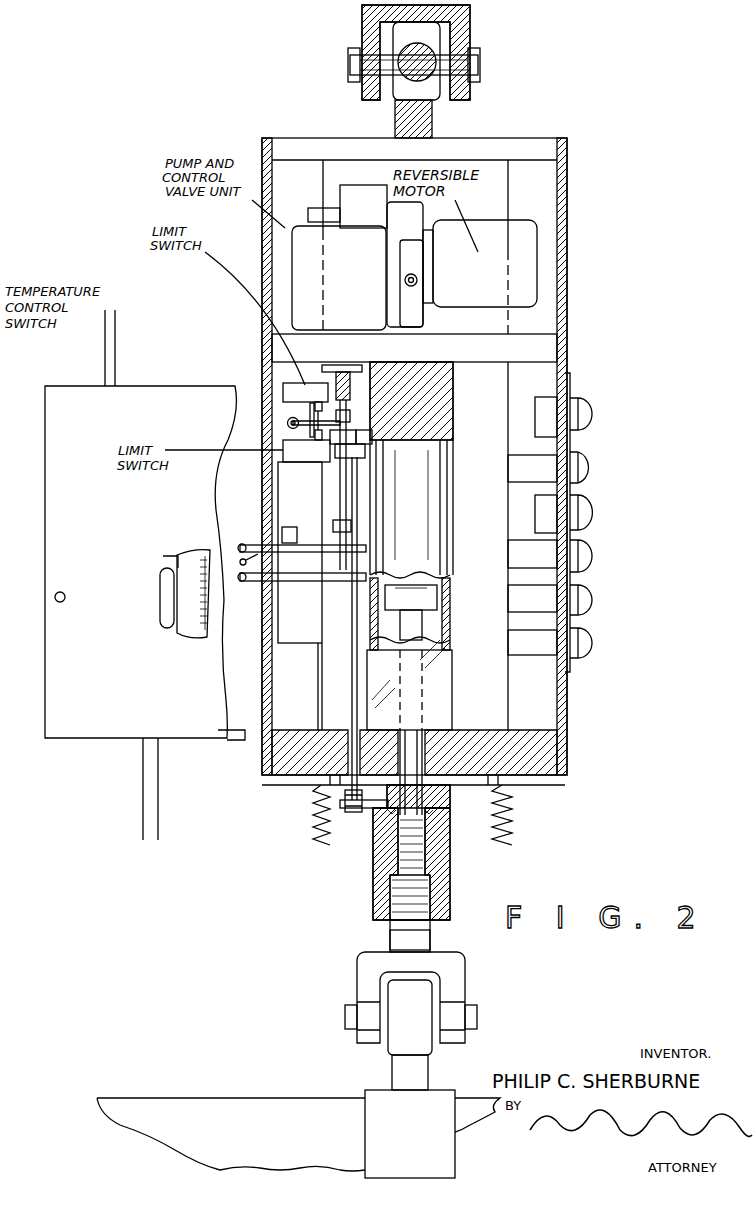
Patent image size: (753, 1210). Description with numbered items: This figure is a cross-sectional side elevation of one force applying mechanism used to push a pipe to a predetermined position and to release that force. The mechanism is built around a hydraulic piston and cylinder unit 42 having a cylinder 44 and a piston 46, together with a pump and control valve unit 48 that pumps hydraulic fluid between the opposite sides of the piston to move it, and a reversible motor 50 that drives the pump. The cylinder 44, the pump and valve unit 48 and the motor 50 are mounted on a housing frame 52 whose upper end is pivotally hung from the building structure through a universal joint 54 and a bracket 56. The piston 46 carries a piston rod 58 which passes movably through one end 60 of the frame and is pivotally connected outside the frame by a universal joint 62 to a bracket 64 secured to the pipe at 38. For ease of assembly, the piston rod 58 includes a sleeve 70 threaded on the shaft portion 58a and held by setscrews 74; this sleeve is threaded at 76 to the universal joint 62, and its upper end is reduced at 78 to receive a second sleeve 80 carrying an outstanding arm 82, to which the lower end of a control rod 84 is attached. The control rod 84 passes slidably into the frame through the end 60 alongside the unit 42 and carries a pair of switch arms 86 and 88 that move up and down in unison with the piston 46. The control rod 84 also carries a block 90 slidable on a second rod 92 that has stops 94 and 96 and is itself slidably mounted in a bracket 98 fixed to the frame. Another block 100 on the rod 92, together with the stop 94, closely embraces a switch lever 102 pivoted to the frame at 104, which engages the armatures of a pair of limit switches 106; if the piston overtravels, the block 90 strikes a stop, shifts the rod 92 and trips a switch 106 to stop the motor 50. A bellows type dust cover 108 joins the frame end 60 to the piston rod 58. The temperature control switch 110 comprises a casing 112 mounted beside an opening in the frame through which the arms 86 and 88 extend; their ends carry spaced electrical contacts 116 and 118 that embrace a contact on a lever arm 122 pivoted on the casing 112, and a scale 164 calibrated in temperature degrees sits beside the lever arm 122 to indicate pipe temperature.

The pipe attachment point 38 is at (376, 1117).
The hydraulic piston and cylinder unit 42 is at (456, 516).
The cylinder 44 is at (437, 605).
The piston 46 is at (450, 570).
The pump and control valve unit 48 is at (340, 278).
The reversible motor 50 is at (530, 240).
The housing frame 52 is at (540, 150).
The universal joint 54 is at (432, 98).
The bracket 56 is at (470, 25).
The piston rod 58 is at (432, 625).
The shaft portion 58a is at (398, 872).
The frame end 60 is at (535, 778).
The universal joint 62 is at (460, 962).
The bracket 64 is at (455, 1092).
The sleeve 70 is at (450, 882).
The setscrews 74 is at (450, 812).
The threaded connection 76 is at (398, 905).
The reduced upper end 78 is at (398, 840).
The second sleeve 80 is at (325, 820).
The outstanding arm 82 is at (345, 800).
The control rod 84 is at (352, 640).
The switch arm 86 is at (297, 535).
The switch arm 88 is at (300, 583).
The block 90 is at (365, 450).
The second rod 92 is at (350, 415).
The stop 94 is at (356, 436).
The stop 96 is at (351, 526).
The bracket 98 is at (350, 375).
The block 100 is at (328, 397).
The switch lever 102 is at (325, 410).
The pivot 104 is at (287, 423).
The limit switches 106 is at (310, 390).
The bellows type dust cover 108 is at (512, 830).
The temperature control switch 110 is at (155, 350).
The casing 112 is at (103, 740).
The electrical contact 116 is at (242, 541).
The electrical contact 118 is at (243, 582).
The lever arm 122 is at (160, 590).
The scale 164 is at (190, 637).